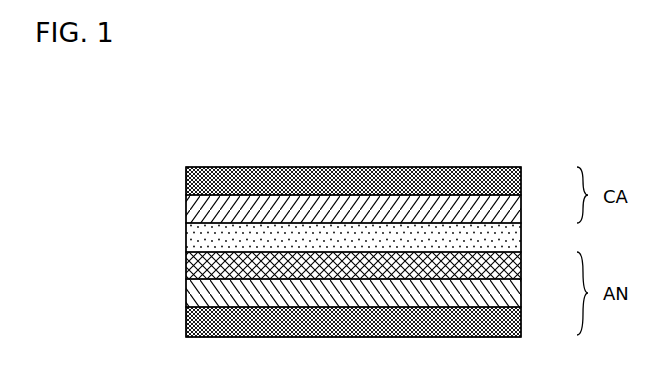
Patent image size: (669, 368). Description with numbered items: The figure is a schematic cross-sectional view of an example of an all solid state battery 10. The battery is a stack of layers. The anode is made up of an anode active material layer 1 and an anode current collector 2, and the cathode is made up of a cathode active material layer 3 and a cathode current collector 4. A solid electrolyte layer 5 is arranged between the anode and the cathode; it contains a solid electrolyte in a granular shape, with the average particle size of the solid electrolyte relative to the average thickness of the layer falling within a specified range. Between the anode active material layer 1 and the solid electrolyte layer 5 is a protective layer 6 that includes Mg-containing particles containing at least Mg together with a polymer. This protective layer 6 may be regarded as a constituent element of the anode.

The all solid state battery 10 is at (510, 121).
The cathode current collector 4 is at (513, 186).
The cathode active material layer 3 is at (512, 208).
The solid electrolyte layer 5 is at (512, 236).
The protective layer 6 is at (512, 265).
The anode active material layer 1 is at (512, 290).
The anode current collector 2 is at (512, 322).